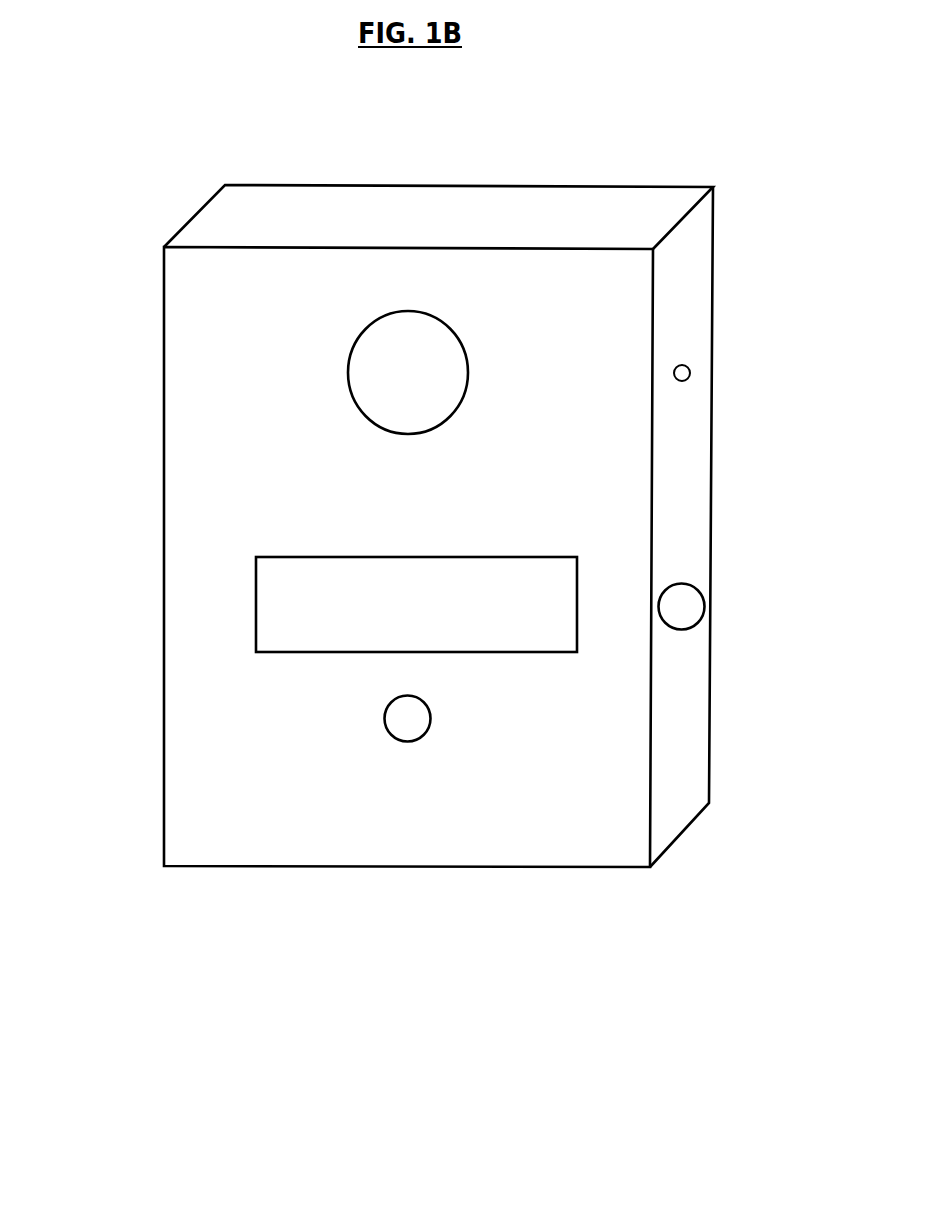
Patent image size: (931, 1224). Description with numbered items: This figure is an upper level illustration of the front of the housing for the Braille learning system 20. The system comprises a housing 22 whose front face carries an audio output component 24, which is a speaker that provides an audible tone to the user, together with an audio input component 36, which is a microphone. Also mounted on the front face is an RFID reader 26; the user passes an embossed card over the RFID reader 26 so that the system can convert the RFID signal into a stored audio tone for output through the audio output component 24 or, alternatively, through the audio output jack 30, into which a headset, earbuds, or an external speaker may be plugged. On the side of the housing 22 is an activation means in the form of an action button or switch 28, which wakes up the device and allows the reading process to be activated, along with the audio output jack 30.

The Braille learning system 20 is at (218, 942).
The housing 22 is at (195, 387).
The audio output component 24 is at (379, 357).
The RFID reader 26 is at (347, 588).
The action button or switch 28 is at (680, 629).
The audio output jack 30 is at (690, 373).
The audio input component 36 is at (408, 711).